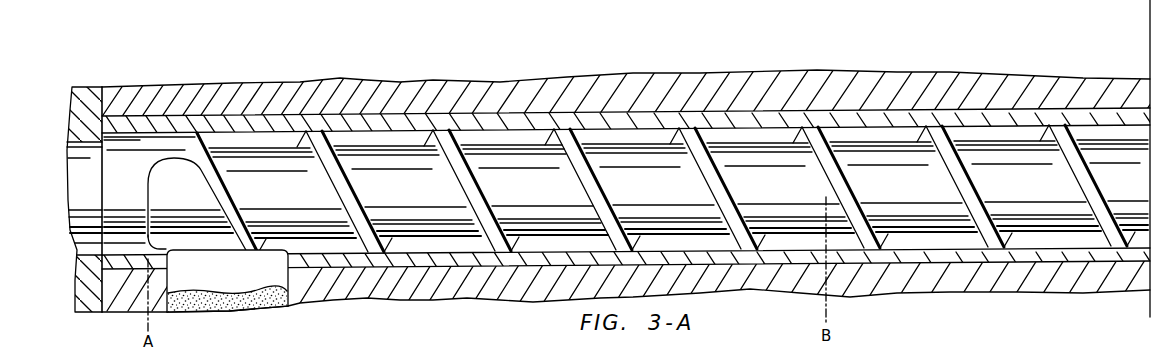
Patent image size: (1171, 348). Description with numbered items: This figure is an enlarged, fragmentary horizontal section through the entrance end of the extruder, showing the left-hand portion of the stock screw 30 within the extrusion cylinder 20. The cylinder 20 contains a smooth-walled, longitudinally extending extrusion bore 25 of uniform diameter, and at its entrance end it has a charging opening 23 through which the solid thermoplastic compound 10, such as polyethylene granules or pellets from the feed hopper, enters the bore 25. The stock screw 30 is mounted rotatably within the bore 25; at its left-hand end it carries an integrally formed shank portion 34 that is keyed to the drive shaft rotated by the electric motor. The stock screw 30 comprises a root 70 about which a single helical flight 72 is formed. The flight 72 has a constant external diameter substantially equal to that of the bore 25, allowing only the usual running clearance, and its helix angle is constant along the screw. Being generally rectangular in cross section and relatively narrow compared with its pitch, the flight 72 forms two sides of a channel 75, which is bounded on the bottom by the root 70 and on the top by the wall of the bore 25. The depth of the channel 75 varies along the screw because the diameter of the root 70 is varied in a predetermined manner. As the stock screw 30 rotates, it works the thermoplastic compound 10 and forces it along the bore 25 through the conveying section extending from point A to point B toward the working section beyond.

The thermoplastic compound 10 is at (240, 311).
The extrusion cylinder 20 is at (389, 293).
The charging opening 23 is at (288, 276).
The extrusion bore 25 is at (381, 136).
The stock screw 30 is at (352, 142).
The shank portion 34 is at (100, 246).
The root 70 is at (435, 236).
The helical flight 72 is at (317, 137).
The channel 75 is at (698, 137).